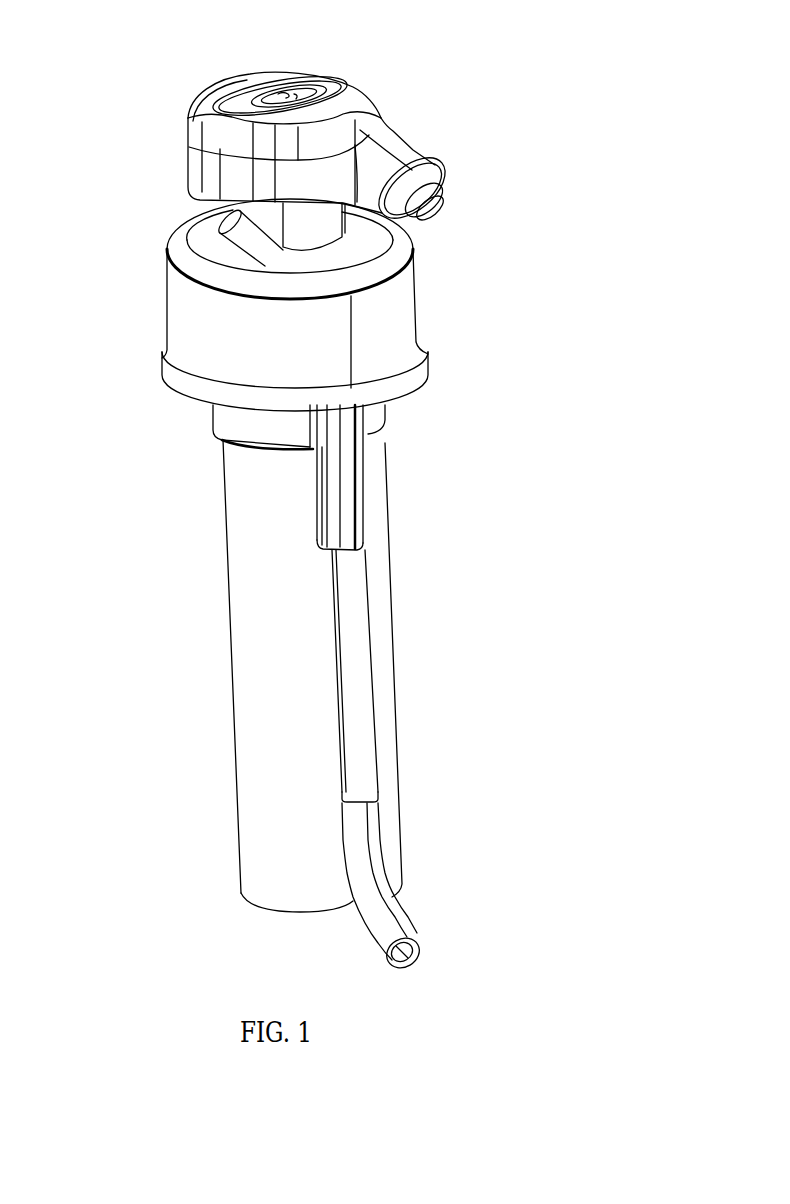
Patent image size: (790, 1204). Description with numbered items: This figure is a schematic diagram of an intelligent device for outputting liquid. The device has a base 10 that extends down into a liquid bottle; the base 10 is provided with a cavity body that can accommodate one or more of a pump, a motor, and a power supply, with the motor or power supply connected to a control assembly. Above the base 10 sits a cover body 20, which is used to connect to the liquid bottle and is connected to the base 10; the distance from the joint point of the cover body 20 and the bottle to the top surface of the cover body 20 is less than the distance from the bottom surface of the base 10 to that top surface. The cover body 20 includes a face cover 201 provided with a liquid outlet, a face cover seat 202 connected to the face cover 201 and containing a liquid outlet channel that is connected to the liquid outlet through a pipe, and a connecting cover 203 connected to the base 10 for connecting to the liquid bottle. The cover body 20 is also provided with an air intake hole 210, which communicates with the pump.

The base 10 is at (213, 572).
The cover body 20 is at (132, 327).
The face cover 201 is at (347, 120).
The face cover seat 202 is at (349, 237).
The connecting cover 203 is at (210, 332).
The air intake hole 210 is at (237, 248).